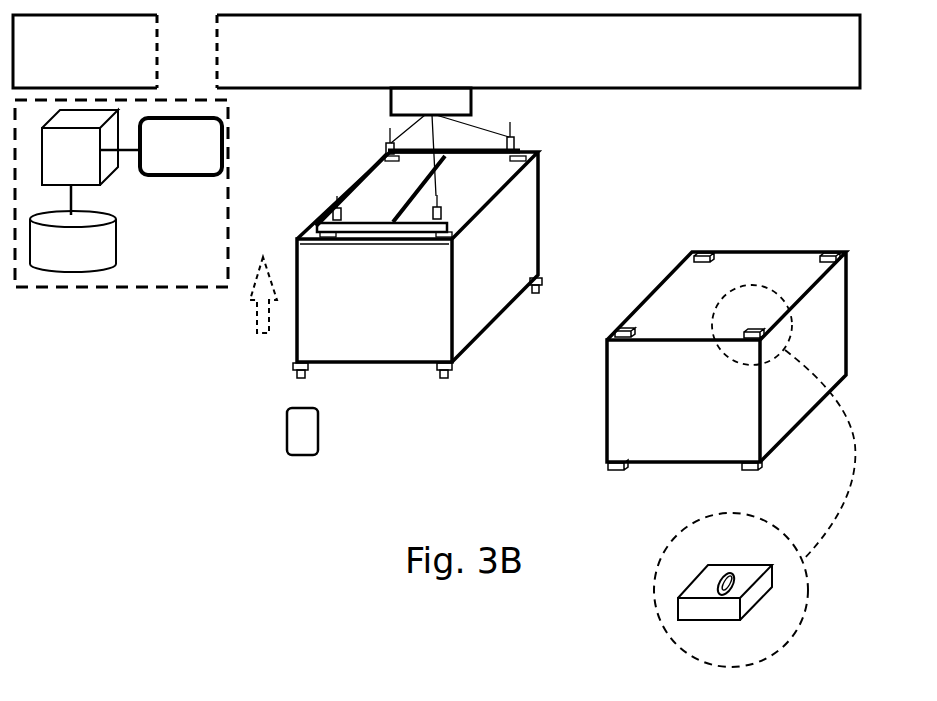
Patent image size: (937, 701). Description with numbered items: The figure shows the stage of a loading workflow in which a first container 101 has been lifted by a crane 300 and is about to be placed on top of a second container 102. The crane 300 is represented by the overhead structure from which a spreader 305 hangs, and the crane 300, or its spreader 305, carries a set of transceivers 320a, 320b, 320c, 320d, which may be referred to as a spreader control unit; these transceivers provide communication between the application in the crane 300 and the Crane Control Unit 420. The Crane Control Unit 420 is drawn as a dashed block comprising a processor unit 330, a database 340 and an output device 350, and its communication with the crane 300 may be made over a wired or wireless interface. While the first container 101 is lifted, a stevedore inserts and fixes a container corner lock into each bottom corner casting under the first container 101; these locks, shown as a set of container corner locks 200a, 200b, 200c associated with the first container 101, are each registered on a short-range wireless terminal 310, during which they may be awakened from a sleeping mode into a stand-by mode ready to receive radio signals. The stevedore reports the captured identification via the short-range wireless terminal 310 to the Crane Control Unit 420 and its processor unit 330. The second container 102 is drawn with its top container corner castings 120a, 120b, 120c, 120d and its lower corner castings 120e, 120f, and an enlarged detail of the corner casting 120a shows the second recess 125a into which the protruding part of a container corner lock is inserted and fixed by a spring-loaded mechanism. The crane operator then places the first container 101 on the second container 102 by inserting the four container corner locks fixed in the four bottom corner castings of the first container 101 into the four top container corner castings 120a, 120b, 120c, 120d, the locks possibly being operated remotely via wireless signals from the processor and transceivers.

The crane 300 is at (469, 66).
The spreader 305 is at (440, 163).
The short-range wireless terminal 310 is at (298, 443).
The transceiver 320a is at (440, 210).
The transceiver 320b is at (513, 143).
The transceiver 320c is at (386, 148).
The transceiver 320d is at (336, 207).
The processor unit 330 is at (94, 166).
The database 340 is at (95, 256).
The output device 350 is at (203, 161).
The Crane Control Unit 420 is at (35, 288).
The first container 101 is at (393, 312).
The second container 102 is at (705, 409).
The container corner lock 200a is at (455, 362).
The container corner lock 200b is at (563, 280).
The container corner lock 200c is at (295, 366).
The container corner casting 120a is at (763, 333).
The container corner casting 120b is at (847, 250).
The container corner casting 120c is at (697, 255).
The container corner casting 120d is at (616, 330).
The corner fitting 120e is at (607, 466).
The corner fitting 120f is at (762, 464).
The second recess 125a is at (745, 579).